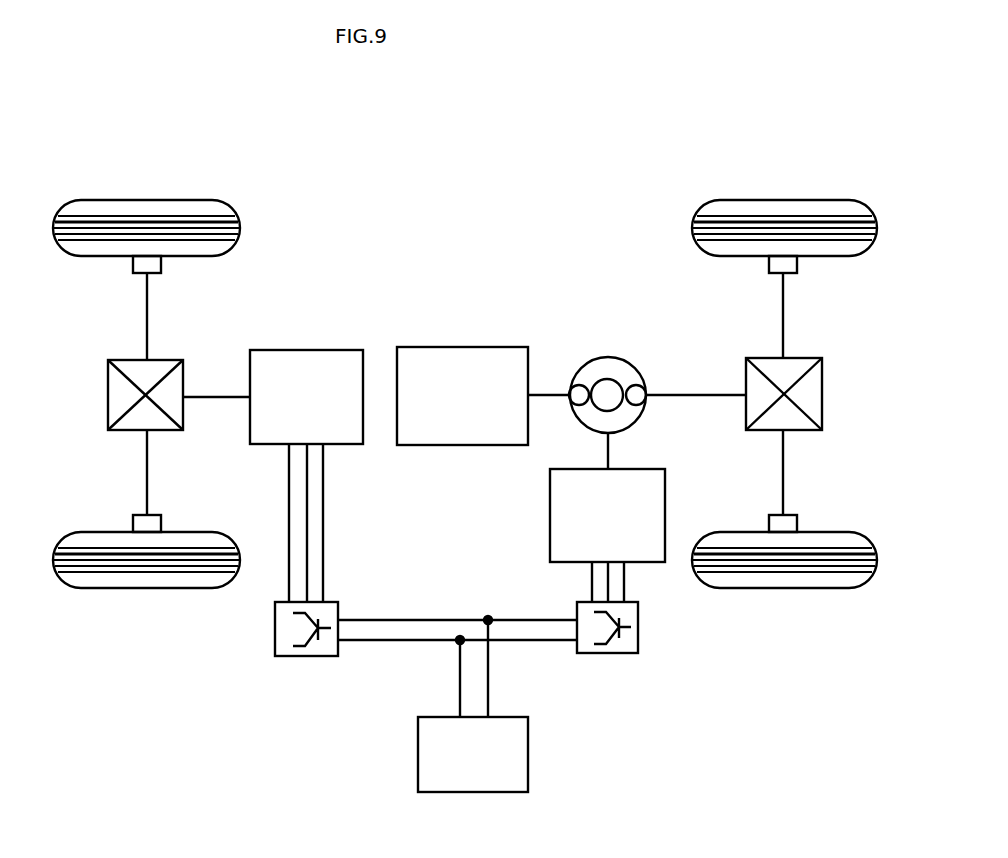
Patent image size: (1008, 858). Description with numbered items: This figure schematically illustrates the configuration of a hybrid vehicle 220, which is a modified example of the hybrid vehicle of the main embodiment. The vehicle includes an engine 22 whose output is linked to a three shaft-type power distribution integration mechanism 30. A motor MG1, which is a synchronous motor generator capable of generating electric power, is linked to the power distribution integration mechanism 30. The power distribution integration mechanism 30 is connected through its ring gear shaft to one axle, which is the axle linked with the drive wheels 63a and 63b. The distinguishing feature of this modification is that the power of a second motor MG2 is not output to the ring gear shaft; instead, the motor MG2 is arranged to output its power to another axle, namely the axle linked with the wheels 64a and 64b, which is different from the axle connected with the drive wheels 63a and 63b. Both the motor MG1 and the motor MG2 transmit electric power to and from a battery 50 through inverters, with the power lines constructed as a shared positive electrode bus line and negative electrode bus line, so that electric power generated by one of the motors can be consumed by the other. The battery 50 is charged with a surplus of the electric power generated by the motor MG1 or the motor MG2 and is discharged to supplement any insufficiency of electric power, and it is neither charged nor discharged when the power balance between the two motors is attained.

The hybrid vehicle 220 is at (469, 148).
The wheel 64a is at (147, 200).
The wheel 64b is at (147, 588).
The drive wheel 63a is at (783, 200).
The drive wheel 63b is at (785, 588).
The motor MG2 is at (305, 350).
The engine 22 is at (463, 347).
The power distribution integration mechanism 30 is at (608, 357).
The motor MG1 is at (550, 508).
The battery 50 is at (528, 752).